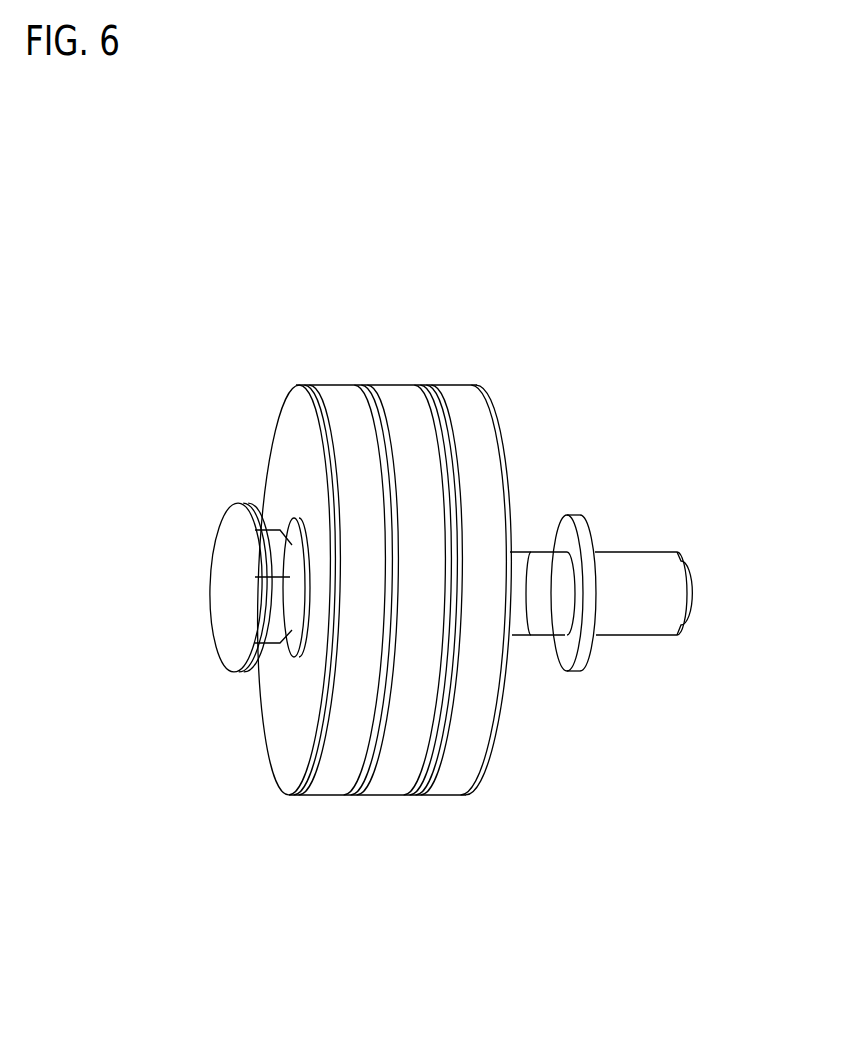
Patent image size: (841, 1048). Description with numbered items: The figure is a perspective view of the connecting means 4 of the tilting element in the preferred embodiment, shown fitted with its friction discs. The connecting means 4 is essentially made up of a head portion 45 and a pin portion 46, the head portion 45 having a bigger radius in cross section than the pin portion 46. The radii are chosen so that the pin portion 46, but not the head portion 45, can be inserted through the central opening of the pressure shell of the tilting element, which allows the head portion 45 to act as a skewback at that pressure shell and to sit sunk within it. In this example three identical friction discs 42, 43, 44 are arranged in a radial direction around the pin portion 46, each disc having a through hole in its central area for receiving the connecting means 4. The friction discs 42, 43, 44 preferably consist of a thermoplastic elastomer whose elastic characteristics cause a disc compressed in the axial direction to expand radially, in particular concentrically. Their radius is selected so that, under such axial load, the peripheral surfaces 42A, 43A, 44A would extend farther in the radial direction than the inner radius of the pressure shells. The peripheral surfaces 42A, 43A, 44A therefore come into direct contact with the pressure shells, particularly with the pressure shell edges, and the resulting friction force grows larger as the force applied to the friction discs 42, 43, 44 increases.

The connecting means 4 is at (370, 510).
The friction disc 42 is at (236, 518).
The peripheral surface 42A is at (265, 496).
The friction disc 43 is at (548, 512).
The peripheral surface 43A is at (524, 478).
The friction disc 44 is at (403, 458).
The peripheral surface 44A is at (433, 484).
The head portion 45 is at (166, 646).
The pin portion 46 is at (613, 508).